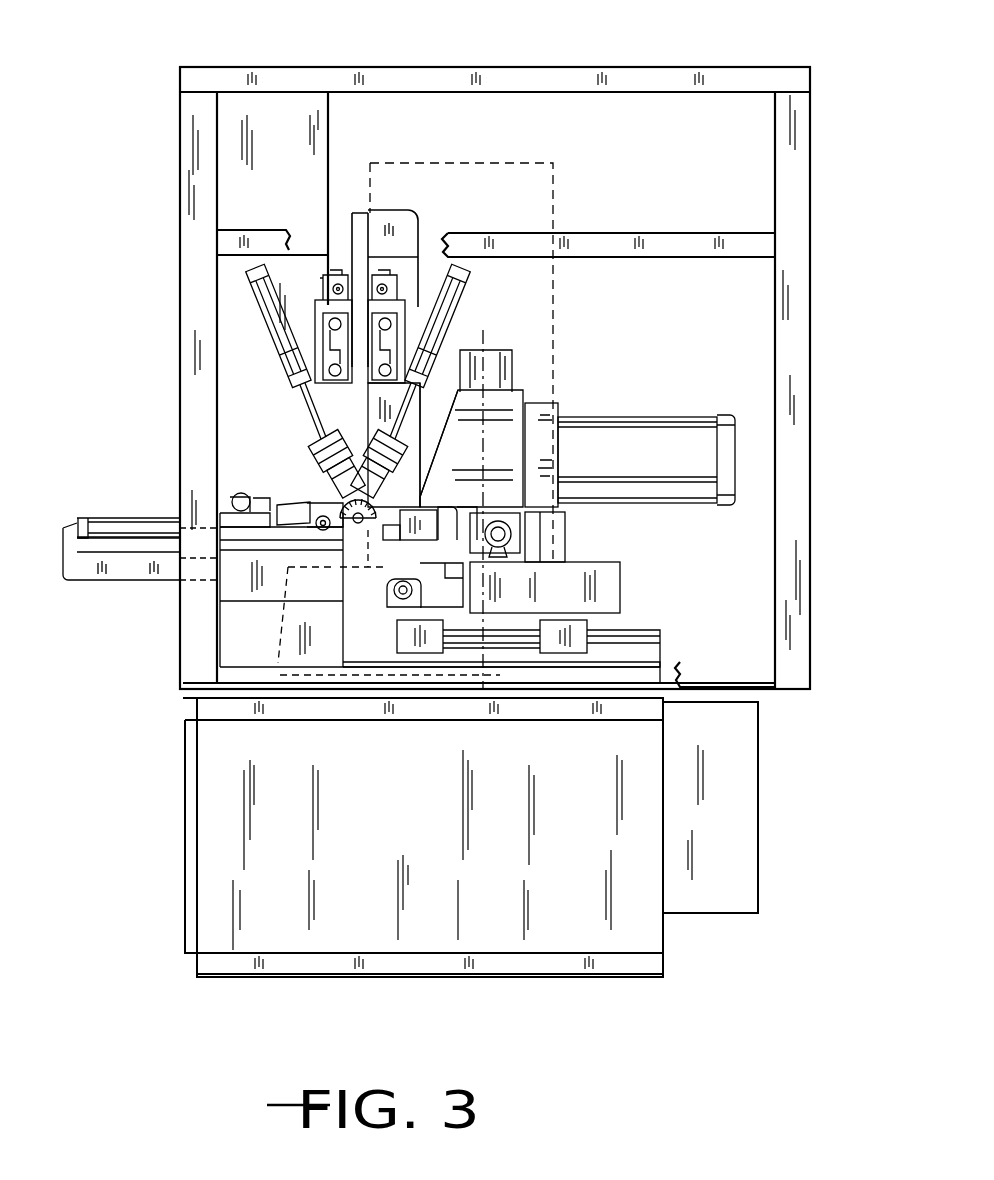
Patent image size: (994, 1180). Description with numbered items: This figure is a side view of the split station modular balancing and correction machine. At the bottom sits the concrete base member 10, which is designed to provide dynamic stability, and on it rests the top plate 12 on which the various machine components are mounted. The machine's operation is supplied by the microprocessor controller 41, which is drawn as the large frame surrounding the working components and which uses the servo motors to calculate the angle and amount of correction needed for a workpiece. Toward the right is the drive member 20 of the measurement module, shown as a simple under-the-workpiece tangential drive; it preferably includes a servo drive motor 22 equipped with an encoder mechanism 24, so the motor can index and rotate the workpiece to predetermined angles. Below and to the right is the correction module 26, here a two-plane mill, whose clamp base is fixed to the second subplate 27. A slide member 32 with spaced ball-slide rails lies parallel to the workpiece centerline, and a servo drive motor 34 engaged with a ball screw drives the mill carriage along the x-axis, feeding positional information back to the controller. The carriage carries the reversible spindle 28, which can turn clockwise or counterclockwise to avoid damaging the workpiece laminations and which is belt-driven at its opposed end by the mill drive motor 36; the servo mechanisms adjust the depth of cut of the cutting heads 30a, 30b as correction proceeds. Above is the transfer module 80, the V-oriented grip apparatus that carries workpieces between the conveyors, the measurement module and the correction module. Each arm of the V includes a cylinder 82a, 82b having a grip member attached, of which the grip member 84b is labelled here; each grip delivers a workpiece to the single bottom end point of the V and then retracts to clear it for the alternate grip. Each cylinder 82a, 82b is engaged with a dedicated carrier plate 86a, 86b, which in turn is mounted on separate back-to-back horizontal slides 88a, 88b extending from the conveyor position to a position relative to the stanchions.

The concrete base member 10 is at (240, 838).
The top plate 12 is at (210, 708).
The drive member 20 is at (558, 404).
The servo drive motor 22 is at (632, 440).
The encoder mechanism 24 is at (737, 430).
The correction module 26 is at (679, 562).
The second subplate 27 is at (540, 683).
The reversible spindle 28 is at (368, 543).
The cutting head 30a is at (348, 547).
The cutting head 30b is at (322, 570).
The slide member 32 is at (640, 634).
The servo drive motor 34 is at (408, 615).
The mill drive motor 36 is at (600, 570).
The microprocessor controller 41 is at (276, 119).
The transfer module 80 is at (354, 315).
The cylinder 82a is at (262, 330).
The cylinder 82b is at (452, 300).
The grip member 84b is at (383, 507).
The carrier plate 86a is at (323, 323).
The carrier plate 86b is at (400, 323).
The horizontal slide 88a is at (312, 318).
The horizontal slide 88b is at (372, 300).